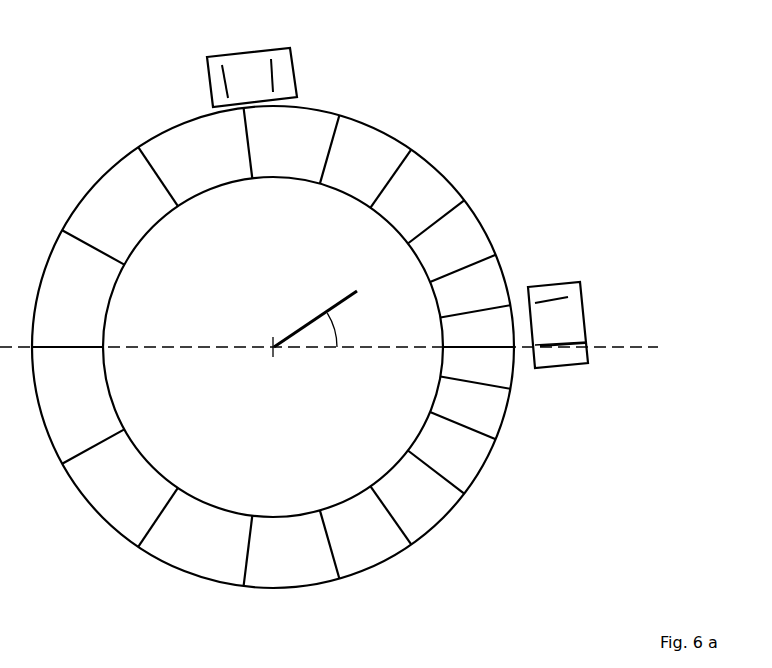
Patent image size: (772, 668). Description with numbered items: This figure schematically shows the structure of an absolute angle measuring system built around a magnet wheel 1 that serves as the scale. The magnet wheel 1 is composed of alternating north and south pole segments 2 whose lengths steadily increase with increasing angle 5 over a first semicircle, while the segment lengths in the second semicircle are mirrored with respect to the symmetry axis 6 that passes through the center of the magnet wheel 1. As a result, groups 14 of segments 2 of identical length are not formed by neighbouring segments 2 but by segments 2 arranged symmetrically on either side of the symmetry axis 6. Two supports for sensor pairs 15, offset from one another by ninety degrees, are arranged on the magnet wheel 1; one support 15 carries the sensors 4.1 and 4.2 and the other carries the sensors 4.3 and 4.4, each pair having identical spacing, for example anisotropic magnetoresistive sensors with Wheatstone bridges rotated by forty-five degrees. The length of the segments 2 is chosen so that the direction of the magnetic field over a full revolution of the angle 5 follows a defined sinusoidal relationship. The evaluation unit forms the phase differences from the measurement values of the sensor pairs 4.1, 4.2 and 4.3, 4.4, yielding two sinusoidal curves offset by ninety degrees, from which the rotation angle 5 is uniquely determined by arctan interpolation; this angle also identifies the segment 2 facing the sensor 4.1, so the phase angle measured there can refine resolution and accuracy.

The magnet wheel 1 is at (463, 492).
The segment 2 is at (355, 145).
The sensor 4.1 is at (562, 347).
The sensor 4.2 is at (555, 298).
The sensor 4.3 is at (273, 73).
The sensor 4.4 is at (223, 82).
The angle 5 is at (336, 328).
The symmetry axis 6 is at (188, 347).
The group 14 is at (88, 387).
The support for sensor pair 15 is at (250, 72).